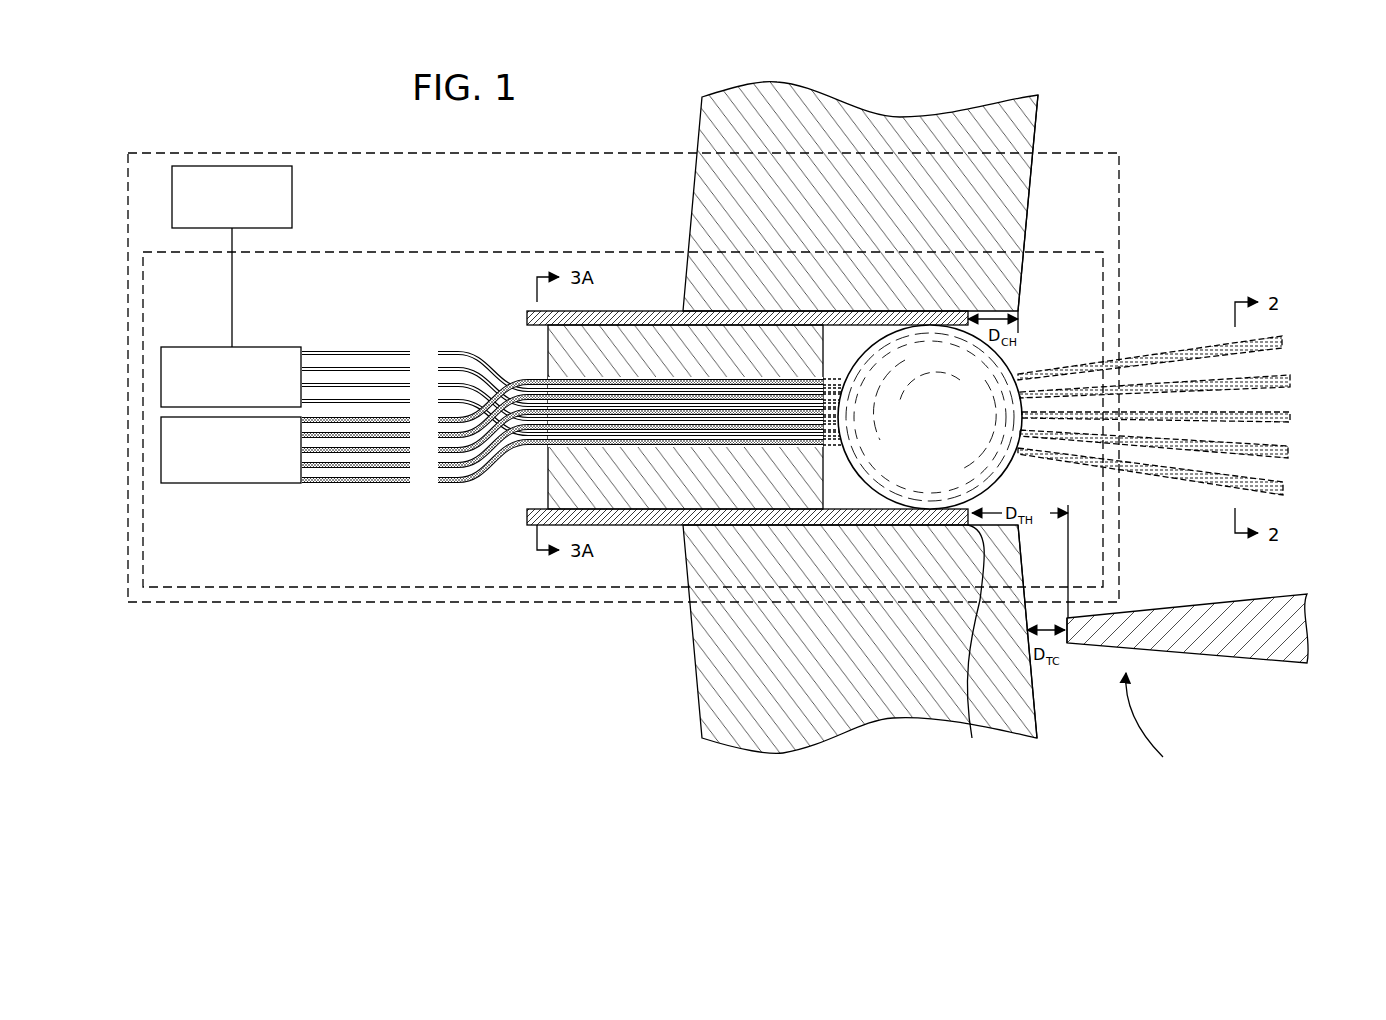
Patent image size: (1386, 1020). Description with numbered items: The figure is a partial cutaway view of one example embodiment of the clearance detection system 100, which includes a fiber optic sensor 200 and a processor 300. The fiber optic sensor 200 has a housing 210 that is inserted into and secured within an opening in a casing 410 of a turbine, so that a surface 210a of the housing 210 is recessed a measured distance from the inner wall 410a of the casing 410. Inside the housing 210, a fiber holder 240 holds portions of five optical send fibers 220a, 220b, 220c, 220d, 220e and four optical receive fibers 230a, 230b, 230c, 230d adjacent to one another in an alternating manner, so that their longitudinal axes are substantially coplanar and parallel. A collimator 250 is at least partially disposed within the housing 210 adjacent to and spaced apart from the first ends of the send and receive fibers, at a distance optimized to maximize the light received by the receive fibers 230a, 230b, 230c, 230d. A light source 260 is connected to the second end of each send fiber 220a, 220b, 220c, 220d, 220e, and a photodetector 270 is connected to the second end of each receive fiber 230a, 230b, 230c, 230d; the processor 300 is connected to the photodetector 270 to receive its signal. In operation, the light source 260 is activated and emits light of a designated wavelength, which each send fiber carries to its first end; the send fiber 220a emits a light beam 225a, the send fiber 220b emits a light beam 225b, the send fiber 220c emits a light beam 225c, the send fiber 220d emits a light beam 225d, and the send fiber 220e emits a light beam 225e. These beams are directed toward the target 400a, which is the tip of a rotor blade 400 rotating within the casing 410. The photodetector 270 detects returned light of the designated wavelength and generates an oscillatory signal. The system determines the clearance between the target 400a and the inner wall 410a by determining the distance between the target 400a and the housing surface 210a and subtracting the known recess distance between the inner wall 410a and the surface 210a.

The clearance detection system 100 is at (347, 145).
The fiber optic sensor 200 is at (480, 243).
The housing 210 is at (643, 311).
The surface of the housing 210a is at (980, 648).
The optical send fiber 220a is at (311, 481).
The optical send fiber 220b is at (325, 465).
The optical send fiber 220c is at (345, 450).
The optical send fiber 220d is at (368, 437).
The optical send fiber 220e is at (388, 420).
The light beam 225a is at (1283, 489).
The light beam 225b is at (1288, 452).
The light beam 225c is at (1290, 417).
The light beam 225d is at (1290, 381).
The light beam 225e is at (1282, 342).
The optical receive fiber 230a is at (318, 353).
The optical receive fiber 230b is at (335, 369).
The optical receive fiber 230c is at (351, 385).
The optical receive fiber 230d is at (390, 401).
The fiber holder 240 is at (548, 480).
The collimator 250 is at (1000, 476).
The light source 260 is at (230, 483).
The photodetector 270 is at (269, 347).
The processor 300 is at (292, 196).
The rotor blade 400 is at (1250, 648).
The target 400a is at (1065, 640).
The casing 410 is at (880, 690).
The inner wall of the casing 410a is at (1038, 123).